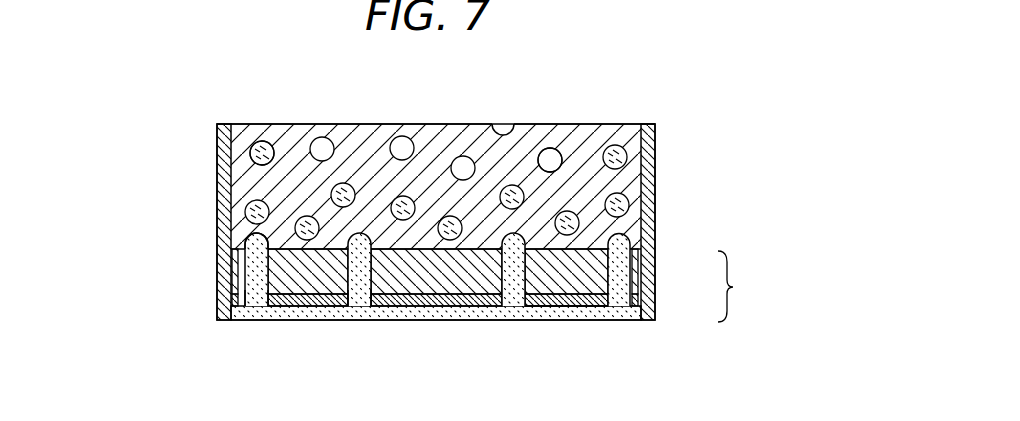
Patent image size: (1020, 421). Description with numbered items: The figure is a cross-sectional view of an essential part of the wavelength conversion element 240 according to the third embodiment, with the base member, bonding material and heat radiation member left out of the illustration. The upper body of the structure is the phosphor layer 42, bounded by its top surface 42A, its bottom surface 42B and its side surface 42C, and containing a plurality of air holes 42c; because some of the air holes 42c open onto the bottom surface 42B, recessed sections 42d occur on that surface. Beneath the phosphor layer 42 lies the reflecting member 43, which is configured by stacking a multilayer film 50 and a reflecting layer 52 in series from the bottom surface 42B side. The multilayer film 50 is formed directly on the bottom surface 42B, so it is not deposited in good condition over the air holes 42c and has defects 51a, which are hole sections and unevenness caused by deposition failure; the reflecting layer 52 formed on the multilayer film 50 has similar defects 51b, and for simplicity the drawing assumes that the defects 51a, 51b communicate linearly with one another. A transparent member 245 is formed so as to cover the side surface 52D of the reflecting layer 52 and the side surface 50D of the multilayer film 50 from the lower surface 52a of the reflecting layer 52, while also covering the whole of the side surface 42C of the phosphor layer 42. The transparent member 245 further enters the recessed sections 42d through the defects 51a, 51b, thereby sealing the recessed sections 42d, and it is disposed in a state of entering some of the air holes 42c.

The wavelength conversion element 240 is at (641, 110).
The phosphor layer 42 is at (636, 145).
The top surface of phosphor layer 42A is at (237, 124).
The bottom surface 42B is at (283, 261).
The side surface 42C is at (226, 190).
The air holes 42c is at (256, 156).
The recessed sections 42d is at (253, 237).
The reflecting member 43 is at (740, 286).
The multilayer film 50 is at (636, 267).
The side surface of multilayer film 50D is at (233, 287).
The reflecting layer 52 is at (636, 304).
The side surface of reflecting layer 52D is at (233, 300).
The lower surface 52a is at (582, 308).
The defects 51a is at (256, 280).
The defects 51b is at (259, 307).
The transparent member 245 is at (346, 184).